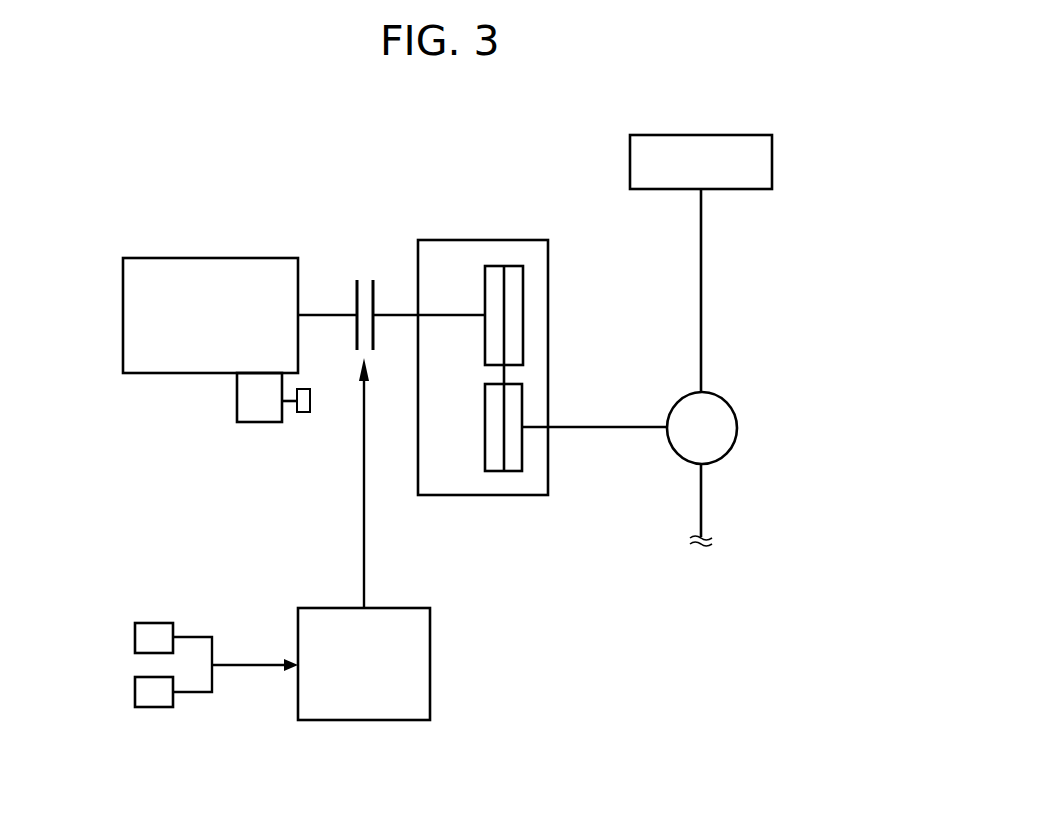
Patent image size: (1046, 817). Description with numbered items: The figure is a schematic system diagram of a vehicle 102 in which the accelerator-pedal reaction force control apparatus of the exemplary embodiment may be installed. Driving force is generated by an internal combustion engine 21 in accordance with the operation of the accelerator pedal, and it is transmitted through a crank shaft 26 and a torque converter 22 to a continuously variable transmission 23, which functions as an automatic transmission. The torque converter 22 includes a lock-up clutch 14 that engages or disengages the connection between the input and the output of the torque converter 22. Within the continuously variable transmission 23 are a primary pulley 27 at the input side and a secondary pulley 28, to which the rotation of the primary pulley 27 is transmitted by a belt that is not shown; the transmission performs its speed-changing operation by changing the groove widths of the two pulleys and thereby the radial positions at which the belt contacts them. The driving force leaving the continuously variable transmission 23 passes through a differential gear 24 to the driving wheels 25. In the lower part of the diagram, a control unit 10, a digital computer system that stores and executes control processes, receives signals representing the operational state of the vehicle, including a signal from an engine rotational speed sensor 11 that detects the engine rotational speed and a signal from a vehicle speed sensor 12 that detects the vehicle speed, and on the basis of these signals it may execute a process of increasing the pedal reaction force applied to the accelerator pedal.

The vehicle 102 is at (673, 99).
The internal combustion engine 21 is at (170, 265).
The crank shaft 26 is at (317, 314).
The torque converter 22 is at (397, 258).
The lock-up clutch 14 is at (367, 273).
The continuously variable transmission (CVT) 23 is at (538, 239).
The primary pulley 27 is at (515, 317).
The secondary pulley 28 is at (513, 447).
The differential gear 24 is at (727, 428).
The driving wheels 25 is at (765, 163).
The control unit 10 is at (430, 662).
The engine rotational speed sensor 11 is at (140, 640).
The vehicle speed sensor 12 is at (140, 695).